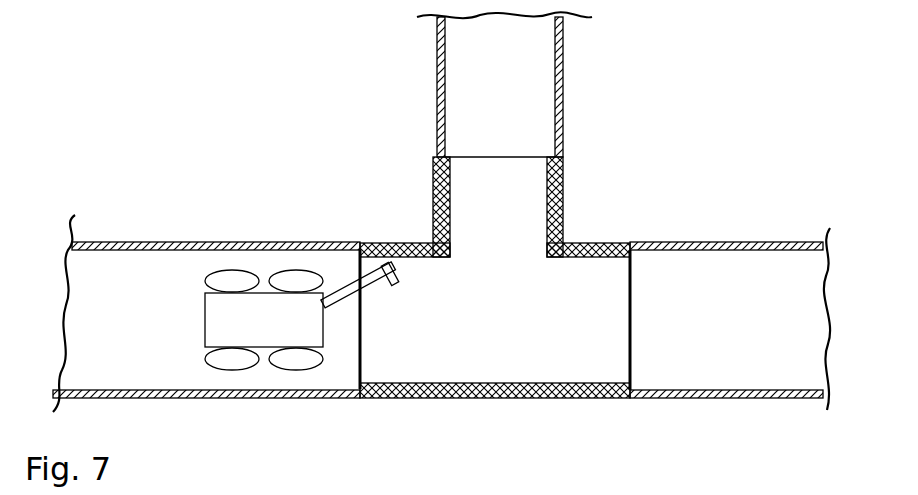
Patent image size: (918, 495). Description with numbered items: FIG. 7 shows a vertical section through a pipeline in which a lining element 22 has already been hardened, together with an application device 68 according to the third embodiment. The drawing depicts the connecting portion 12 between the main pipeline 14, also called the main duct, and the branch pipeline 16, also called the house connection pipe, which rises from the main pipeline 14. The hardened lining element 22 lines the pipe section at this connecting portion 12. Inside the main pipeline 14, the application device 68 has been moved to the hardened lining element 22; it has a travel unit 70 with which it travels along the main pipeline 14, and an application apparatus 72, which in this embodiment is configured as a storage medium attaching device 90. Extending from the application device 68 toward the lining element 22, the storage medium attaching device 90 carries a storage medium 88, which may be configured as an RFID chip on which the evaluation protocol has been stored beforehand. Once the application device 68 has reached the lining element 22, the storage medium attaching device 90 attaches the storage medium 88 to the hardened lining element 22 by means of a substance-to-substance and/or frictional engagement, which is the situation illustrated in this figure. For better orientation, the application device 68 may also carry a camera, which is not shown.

The connecting portion 12 is at (572, 224).
The main pipeline 14 is at (707, 242).
The branch pipeline 16 is at (563, 68).
The lining element 22 is at (595, 247).
The application device 68 is at (263, 269).
The travel unit 70 is at (233, 358).
The application apparatus 72 is at (345, 292).
The storage medium 88 is at (386, 262).
The storage medium attaching device 90 is at (345, 292).